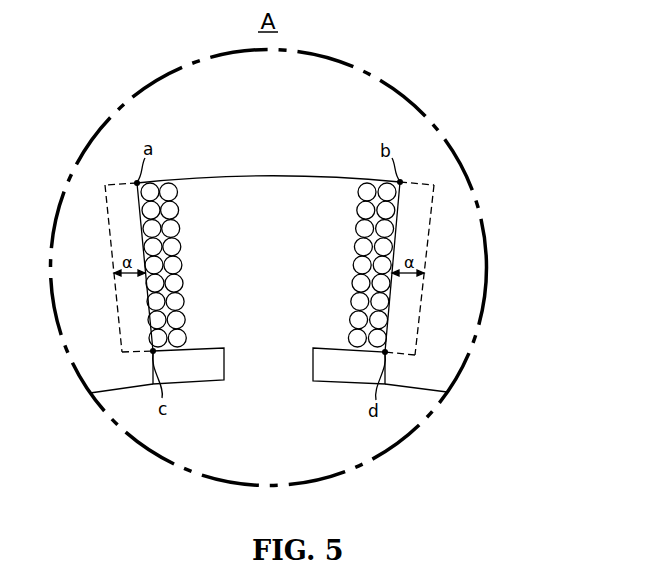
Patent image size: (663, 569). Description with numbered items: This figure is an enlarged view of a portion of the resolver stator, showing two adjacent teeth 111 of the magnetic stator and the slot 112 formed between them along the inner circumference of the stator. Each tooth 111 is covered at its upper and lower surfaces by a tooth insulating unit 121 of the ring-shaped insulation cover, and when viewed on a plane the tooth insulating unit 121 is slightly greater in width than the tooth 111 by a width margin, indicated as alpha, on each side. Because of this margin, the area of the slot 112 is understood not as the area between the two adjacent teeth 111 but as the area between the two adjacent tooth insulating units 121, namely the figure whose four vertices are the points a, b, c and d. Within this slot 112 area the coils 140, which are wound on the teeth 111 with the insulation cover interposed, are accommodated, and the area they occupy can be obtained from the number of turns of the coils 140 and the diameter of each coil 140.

The tooth 111 is at (115, 300).
The slot 112 is at (280, 226).
The tooth insulating unit 121 is at (453, 298).
The coil 140 is at (182, 318).